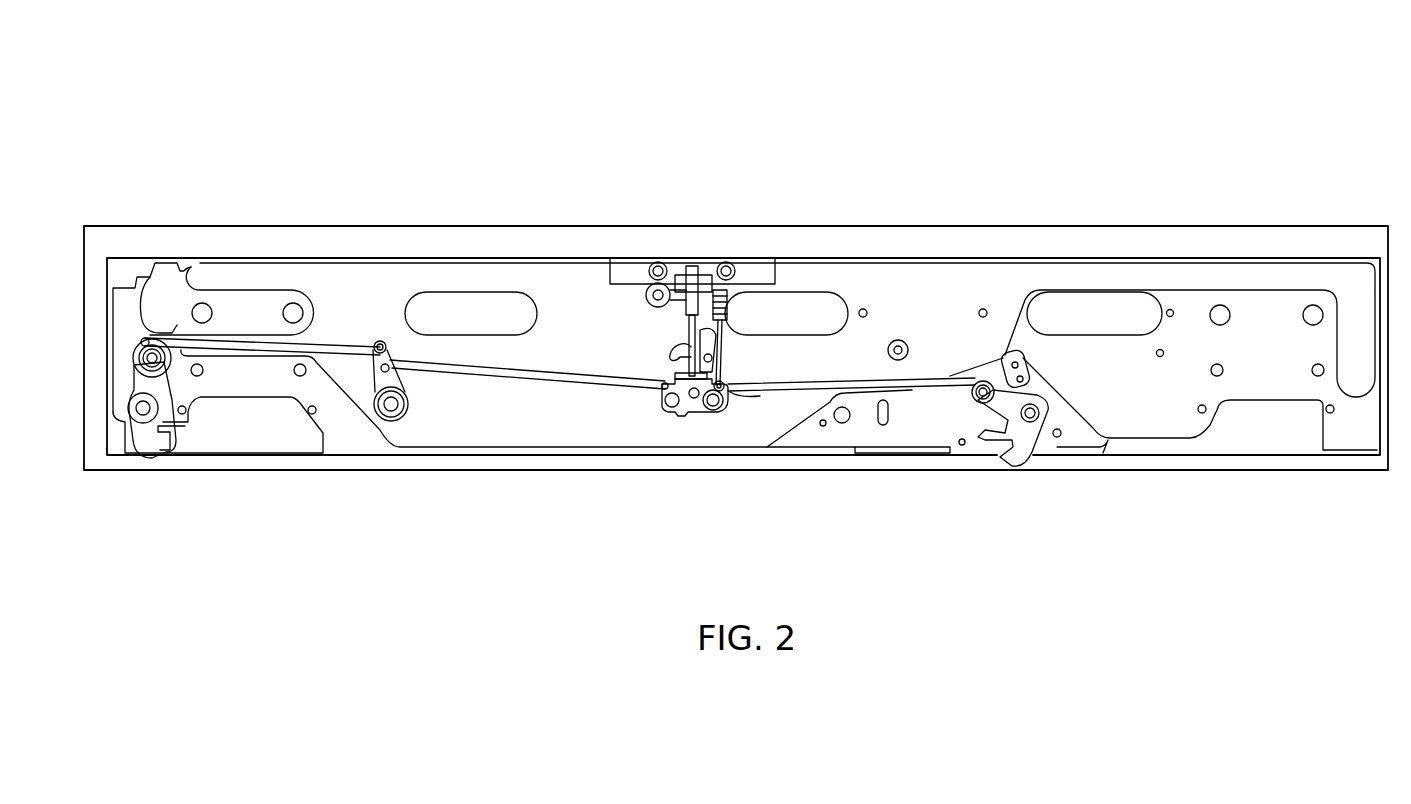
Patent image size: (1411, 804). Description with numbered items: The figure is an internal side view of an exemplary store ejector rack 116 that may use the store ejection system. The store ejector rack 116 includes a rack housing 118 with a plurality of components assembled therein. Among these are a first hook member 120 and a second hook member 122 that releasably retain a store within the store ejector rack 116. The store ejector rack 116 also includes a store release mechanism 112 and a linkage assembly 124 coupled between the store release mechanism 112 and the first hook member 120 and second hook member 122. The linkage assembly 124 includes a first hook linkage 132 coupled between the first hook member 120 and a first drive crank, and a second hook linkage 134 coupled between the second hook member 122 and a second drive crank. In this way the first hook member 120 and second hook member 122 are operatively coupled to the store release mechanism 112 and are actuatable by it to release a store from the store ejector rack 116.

The store ejector rack 116 is at (1188, 133).
The rack housing 118 is at (1262, 275).
The first hook member 120 is at (145, 450).
The second hook member 122 is at (1032, 458).
The linkage assembly 124 is at (383, 437).
The first hook linkage 132 is at (457, 344).
The second hook linkage 134 is at (906, 418).
The store release mechanism 112 is at (733, 425).